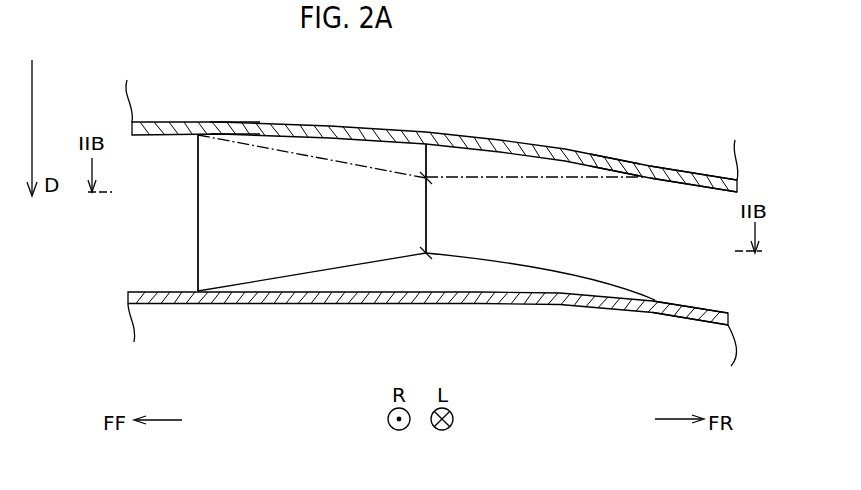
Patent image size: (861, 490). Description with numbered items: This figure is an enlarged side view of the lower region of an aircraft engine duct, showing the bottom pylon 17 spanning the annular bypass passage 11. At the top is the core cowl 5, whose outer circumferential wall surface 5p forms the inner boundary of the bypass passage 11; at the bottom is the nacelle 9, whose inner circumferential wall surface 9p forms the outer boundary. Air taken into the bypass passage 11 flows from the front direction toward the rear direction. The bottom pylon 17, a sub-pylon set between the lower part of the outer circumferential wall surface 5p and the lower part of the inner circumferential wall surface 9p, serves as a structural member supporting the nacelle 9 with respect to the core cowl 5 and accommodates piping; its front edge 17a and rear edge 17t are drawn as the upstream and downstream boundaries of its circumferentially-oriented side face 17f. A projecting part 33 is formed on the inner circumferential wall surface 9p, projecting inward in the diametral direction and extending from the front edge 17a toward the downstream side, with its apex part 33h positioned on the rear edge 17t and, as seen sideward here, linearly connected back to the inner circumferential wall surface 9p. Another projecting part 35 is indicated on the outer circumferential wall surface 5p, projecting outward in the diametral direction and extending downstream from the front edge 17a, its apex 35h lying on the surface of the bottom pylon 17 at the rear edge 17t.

The core cowl 5 is at (170, 122).
The outer circumferential wall surface of the core cowl 5p is at (676, 184).
The nacelle 9 is at (145, 292).
The inner circumferential wall surface of the nacelle 9p is at (678, 302).
The bypass passage 11 is at (608, 192).
The bottom pylon 17 is at (312, 213).
The front edge of the bottom pylon 17a is at (198, 225).
The circumferentially-oriented side face of the bottom pylon 17f is at (236, 168).
The rear edge of the bottom pylon 17t is at (428, 215).
The projecting part 33 is at (556, 268).
The apex part of the projecting part 33h is at (428, 251).
The projecting part on the core cowl 35 is at (356, 168).
The apex of the projecting part on the core cowl 35h is at (438, 181).